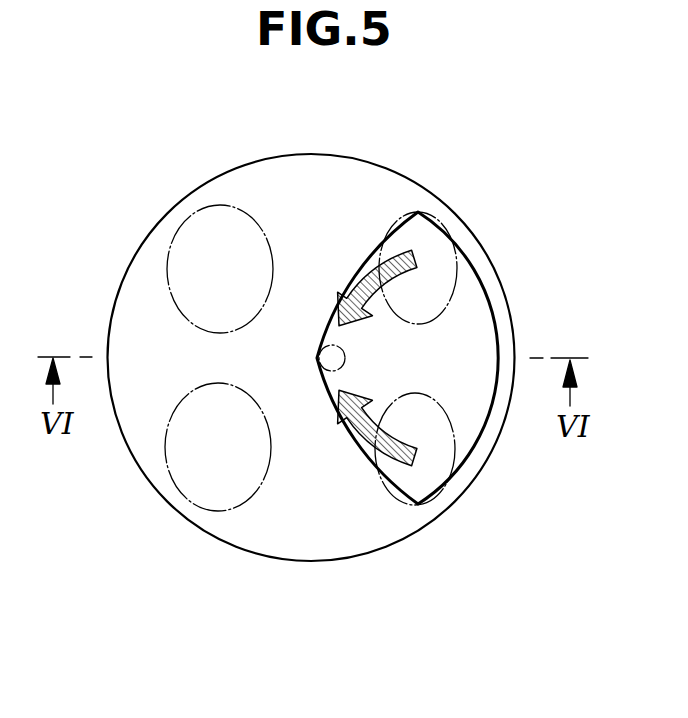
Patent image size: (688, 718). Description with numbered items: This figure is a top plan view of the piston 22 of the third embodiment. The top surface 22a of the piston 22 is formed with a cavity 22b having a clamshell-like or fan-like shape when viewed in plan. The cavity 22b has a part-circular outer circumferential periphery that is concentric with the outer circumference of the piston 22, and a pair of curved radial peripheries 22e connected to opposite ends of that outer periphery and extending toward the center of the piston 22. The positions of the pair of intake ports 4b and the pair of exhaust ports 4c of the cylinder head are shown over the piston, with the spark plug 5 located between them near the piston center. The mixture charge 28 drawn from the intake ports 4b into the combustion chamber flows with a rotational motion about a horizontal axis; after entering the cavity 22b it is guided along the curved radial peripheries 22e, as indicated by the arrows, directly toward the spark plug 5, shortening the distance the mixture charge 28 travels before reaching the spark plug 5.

The piston 22 is at (461, 214).
The top surface 22a is at (268, 187).
The cavity 22b is at (467, 323).
The curved radial peripheries 22e is at (350, 287).
The spark plug 5 is at (334, 345).
The intake ports 4b is at (166, 262).
The exhaust ports 4c is at (458, 266).
The mixture charge 28 is at (404, 468).